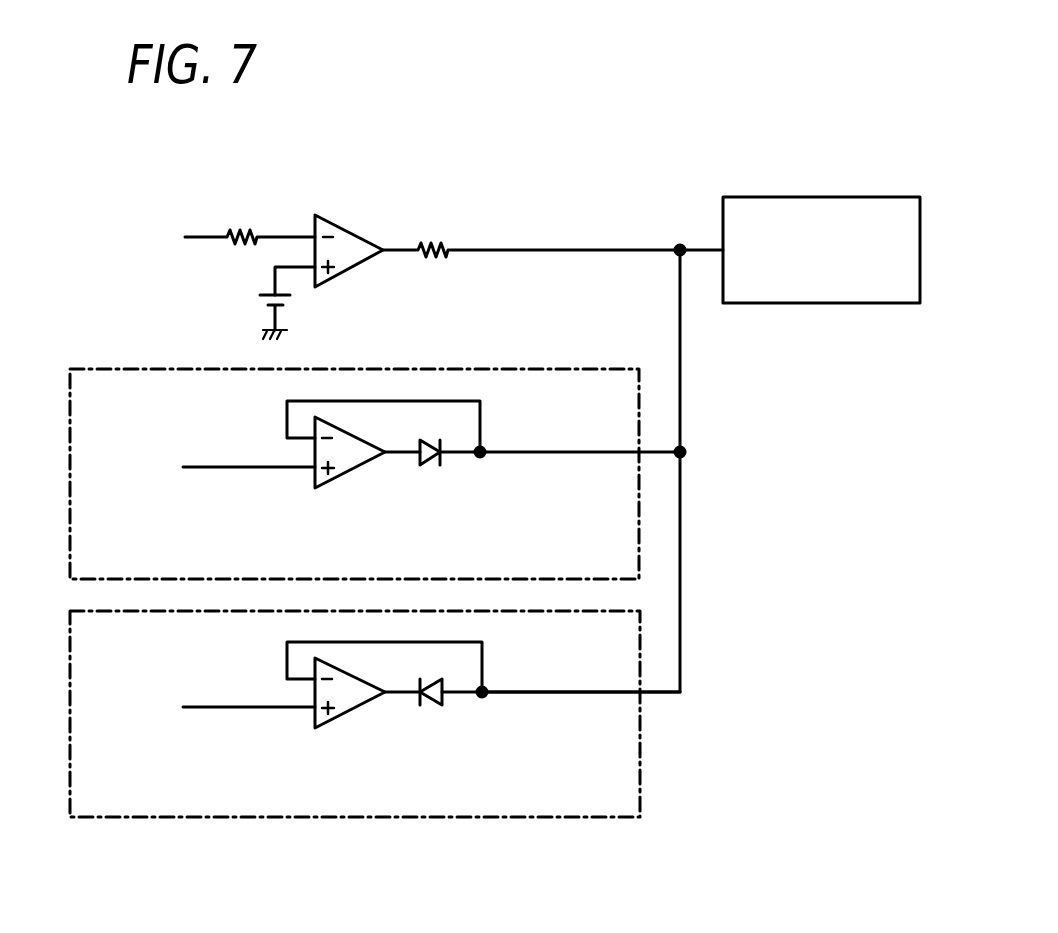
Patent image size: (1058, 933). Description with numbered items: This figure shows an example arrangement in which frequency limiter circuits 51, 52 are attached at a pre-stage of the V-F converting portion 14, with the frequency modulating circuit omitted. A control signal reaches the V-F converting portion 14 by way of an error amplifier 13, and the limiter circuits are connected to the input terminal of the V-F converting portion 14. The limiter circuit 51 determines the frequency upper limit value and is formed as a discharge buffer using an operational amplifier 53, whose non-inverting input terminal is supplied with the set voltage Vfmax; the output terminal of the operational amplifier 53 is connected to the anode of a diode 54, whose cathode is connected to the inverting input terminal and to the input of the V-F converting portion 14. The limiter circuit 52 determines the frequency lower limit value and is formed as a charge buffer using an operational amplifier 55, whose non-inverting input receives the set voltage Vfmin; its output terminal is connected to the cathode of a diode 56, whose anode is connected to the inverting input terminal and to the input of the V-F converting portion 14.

The error amplifier 13 is at (380, 212).
The V-F converting portion 14 is at (820, 196).
The limiter circuit 51 is at (575, 368).
The limiter circuit 52 is at (563, 818).
The operational amplifier 53 is at (342, 477).
The diode 54 is at (432, 463).
The operational amplifier 55 is at (342, 717).
The diode 56 is at (433, 702).